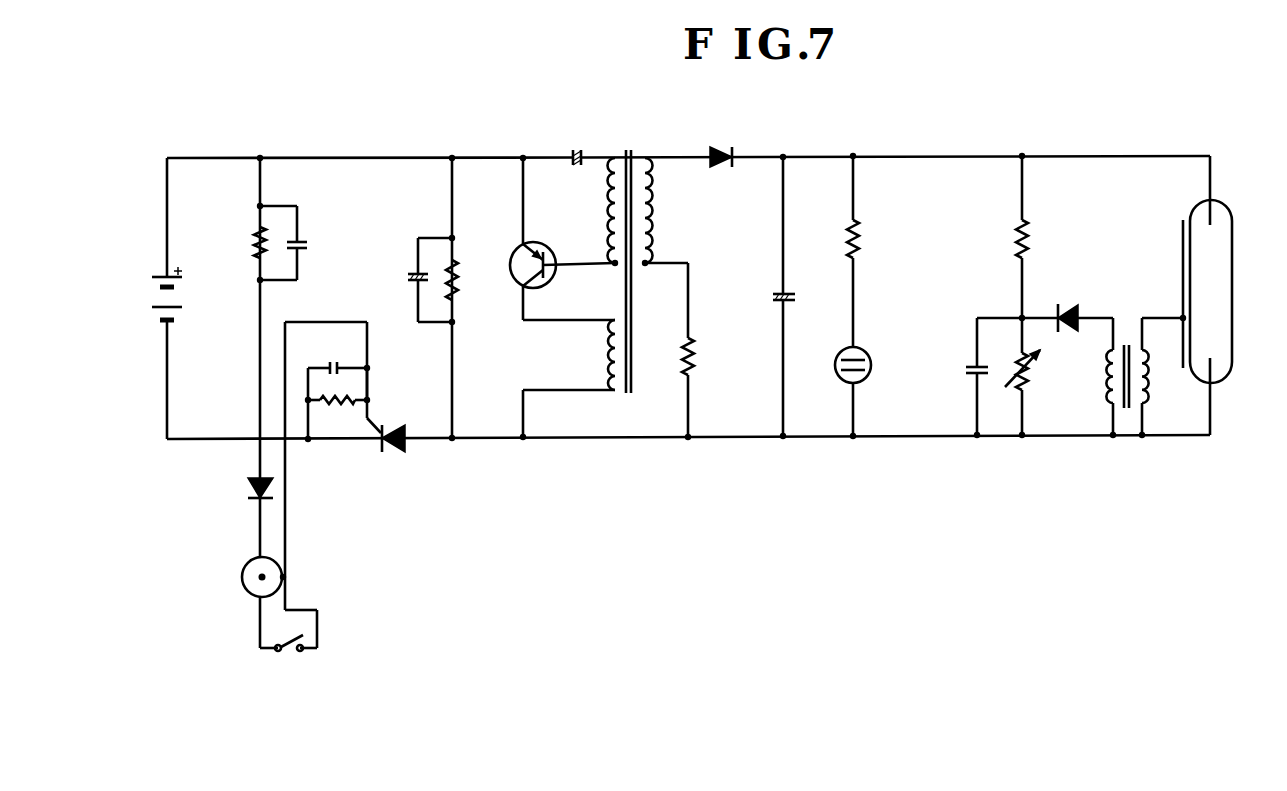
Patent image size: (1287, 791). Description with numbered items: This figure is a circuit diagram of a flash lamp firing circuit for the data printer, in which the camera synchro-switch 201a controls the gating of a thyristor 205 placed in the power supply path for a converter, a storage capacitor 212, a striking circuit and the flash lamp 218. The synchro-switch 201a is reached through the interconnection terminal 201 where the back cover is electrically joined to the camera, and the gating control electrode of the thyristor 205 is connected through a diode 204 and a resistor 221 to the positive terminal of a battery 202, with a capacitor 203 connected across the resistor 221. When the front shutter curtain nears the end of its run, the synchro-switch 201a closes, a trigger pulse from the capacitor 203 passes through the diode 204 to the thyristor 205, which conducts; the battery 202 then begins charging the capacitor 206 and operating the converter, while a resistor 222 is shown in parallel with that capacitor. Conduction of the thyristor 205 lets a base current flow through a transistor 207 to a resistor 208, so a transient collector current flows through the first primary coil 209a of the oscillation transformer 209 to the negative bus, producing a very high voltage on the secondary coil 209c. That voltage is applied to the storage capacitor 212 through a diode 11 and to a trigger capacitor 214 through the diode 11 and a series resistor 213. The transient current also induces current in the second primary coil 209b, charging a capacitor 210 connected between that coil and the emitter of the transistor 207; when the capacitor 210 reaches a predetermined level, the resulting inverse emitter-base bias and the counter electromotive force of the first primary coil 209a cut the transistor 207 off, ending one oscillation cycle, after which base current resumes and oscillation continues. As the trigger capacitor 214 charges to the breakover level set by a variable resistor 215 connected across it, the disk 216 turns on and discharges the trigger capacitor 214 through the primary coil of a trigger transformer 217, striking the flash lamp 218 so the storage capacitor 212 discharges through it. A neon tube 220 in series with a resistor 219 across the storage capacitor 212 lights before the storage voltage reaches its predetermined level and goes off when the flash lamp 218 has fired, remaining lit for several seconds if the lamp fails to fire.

The battery 202 is at (180, 296).
The resistor 221 is at (245, 245).
The capacitor 203 is at (312, 246).
The capacitor 206 is at (402, 281).
The resistor 222 is at (469, 280).
The transistor 207 is at (556, 237).
The capacitor 210 is at (577, 149).
The oscillation transformer 209 is at (637, 252).
The first primary coil 209a is at (608, 353).
The second primary coil 209b is at (607, 222).
The secondary coil 209c is at (653, 220).
The diode 11 is at (720, 150).
The resistor 208 is at (704, 356).
The storage capacitor 212 is at (801, 296).
The resistor 219 is at (868, 239).
The neon tube 220 is at (870, 365).
The trigger capacitor 214 is at (962, 371).
The variable resistor 215 is at (1033, 371).
The resistor 213 is at (1037, 239).
The disk 216 is at (1067, 303).
The trigger transformer 217 is at (1127, 345).
The flash lamp 218 is at (1225, 218).
The diode 204 is at (243, 489).
The interconnection terminal 201 is at (246, 577).
The synchro-switch 201a is at (291, 658).
The thyristor 205 is at (400, 426).